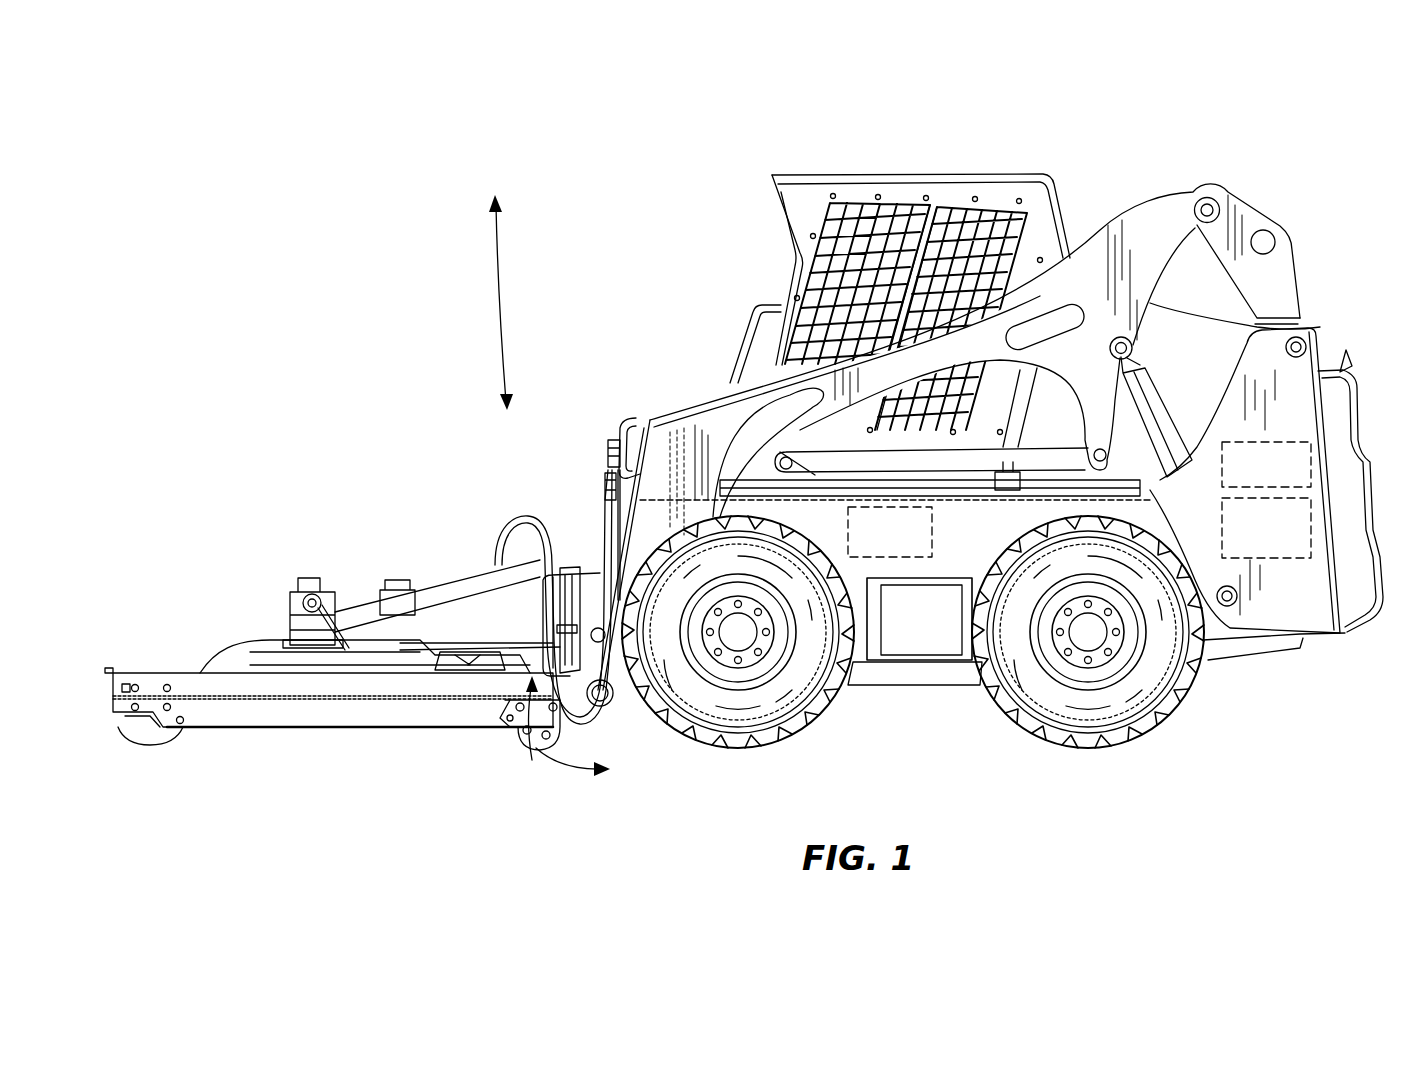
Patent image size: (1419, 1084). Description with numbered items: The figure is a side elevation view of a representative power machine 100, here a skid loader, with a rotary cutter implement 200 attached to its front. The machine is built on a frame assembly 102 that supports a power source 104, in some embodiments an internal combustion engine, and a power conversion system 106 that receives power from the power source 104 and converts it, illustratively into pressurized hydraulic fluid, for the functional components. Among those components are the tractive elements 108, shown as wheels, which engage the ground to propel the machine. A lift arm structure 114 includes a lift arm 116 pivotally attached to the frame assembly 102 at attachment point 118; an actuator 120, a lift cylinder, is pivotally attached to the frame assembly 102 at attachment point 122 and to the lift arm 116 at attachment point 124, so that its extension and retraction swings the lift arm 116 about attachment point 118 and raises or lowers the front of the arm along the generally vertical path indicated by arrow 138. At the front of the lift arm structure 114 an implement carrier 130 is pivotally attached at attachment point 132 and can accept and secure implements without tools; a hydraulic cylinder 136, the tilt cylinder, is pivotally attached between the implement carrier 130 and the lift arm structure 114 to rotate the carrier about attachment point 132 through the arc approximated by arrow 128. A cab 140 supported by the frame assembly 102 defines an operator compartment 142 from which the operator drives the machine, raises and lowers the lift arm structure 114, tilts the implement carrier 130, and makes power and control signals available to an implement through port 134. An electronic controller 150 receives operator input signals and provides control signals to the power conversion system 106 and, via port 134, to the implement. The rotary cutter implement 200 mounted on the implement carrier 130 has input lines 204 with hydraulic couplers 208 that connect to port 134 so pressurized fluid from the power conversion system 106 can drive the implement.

The power machine 100 is at (620, 138).
The frame assembly 102 is at (1011, 533).
The power source 104 is at (1266, 464).
The power conversion system 106 is at (1266, 528).
The tractive elements 108 is at (790, 735).
The lift arm structure 114 is at (1001, 392).
The lift arm 116 is at (745, 413).
The attachment point 118 is at (1303, 338).
The actuator 120 is at (1160, 368).
The attachment point 122 is at (1232, 608).
The attachment point 124 is at (1112, 342).
The arrow 128 is at (536, 760).
The implement carrier 130 is at (550, 582).
The attachment point 132 is at (606, 712).
The port 134 is at (624, 418).
The hydraulic cylinder 136 is at (600, 610).
The arrow 138 is at (495, 300).
The cab 140 is at (879, 281).
The operator compartment 142 is at (772, 262).
The electronic controller 150 is at (890, 532).
The rotary cutter implement 200 is at (357, 629).
The input lines 204 is at (520, 523).
The hydraulic couplers 208 is at (607, 444).